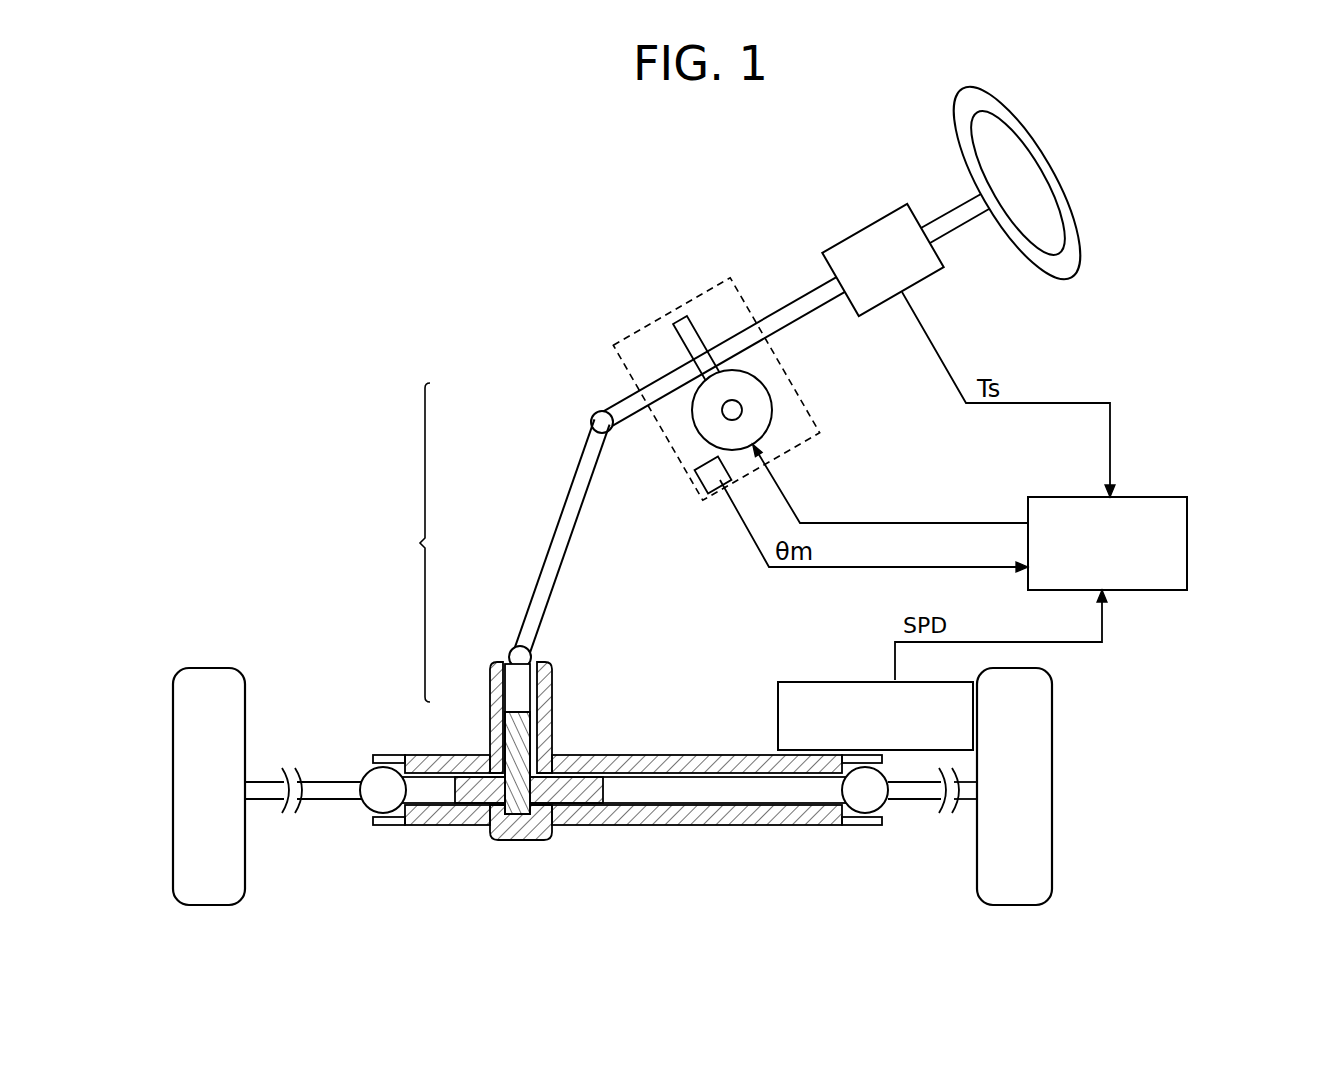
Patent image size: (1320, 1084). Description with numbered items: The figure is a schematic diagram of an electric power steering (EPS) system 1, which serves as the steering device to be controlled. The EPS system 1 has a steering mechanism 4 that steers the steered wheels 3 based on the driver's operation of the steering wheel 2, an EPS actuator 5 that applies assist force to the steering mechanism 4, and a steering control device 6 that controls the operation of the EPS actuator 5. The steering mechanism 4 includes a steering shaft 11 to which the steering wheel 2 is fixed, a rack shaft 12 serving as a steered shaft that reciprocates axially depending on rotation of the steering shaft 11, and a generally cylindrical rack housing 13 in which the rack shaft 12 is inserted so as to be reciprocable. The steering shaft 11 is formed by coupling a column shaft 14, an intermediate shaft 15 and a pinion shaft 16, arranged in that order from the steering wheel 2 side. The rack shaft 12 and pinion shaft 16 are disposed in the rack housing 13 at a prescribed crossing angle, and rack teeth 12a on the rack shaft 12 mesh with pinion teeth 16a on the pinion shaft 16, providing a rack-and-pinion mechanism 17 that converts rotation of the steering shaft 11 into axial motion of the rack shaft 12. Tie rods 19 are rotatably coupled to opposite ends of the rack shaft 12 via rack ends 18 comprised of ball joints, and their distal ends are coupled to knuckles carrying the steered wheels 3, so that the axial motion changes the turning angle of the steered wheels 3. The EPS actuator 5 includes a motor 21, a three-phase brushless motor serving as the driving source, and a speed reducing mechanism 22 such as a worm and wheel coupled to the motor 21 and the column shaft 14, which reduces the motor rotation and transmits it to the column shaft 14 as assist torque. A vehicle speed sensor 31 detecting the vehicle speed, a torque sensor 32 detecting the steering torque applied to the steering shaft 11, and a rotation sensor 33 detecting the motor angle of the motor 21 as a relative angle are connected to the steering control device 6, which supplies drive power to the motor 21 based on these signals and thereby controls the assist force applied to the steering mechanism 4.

The electric power steering system 1 is at (365, 180).
The steering wheel 2 is at (1075, 212).
The steered wheels 3 is at (209, 905).
The steering mechanism 4 is at (307, 557).
The EPS actuator 5 is at (665, 312).
The steering control device 6 is at (1187, 545).
The steering shaft 11 is at (614, 545).
The rack shaft 12 is at (652, 757).
The rack teeth 12a is at (480, 797).
The rack housing 13 is at (732, 757).
The column shaft 14 is at (622, 403).
The intermediate shaft 15 is at (558, 543).
The pinion shaft 16 is at (517, 675).
The pinion teeth 16a is at (522, 822).
The rack-and-pinion mechanism 17 is at (543, 820).
The rack ends 18 is at (390, 800).
The tie rods 19 is at (333, 797).
The motor 21 is at (773, 402).
The speed reducing mechanism 22 is at (708, 412).
The vehicle speed sensor 31 is at (838, 680).
The torque sensor 32 is at (867, 227).
The rotation sensor 33 is at (696, 476).